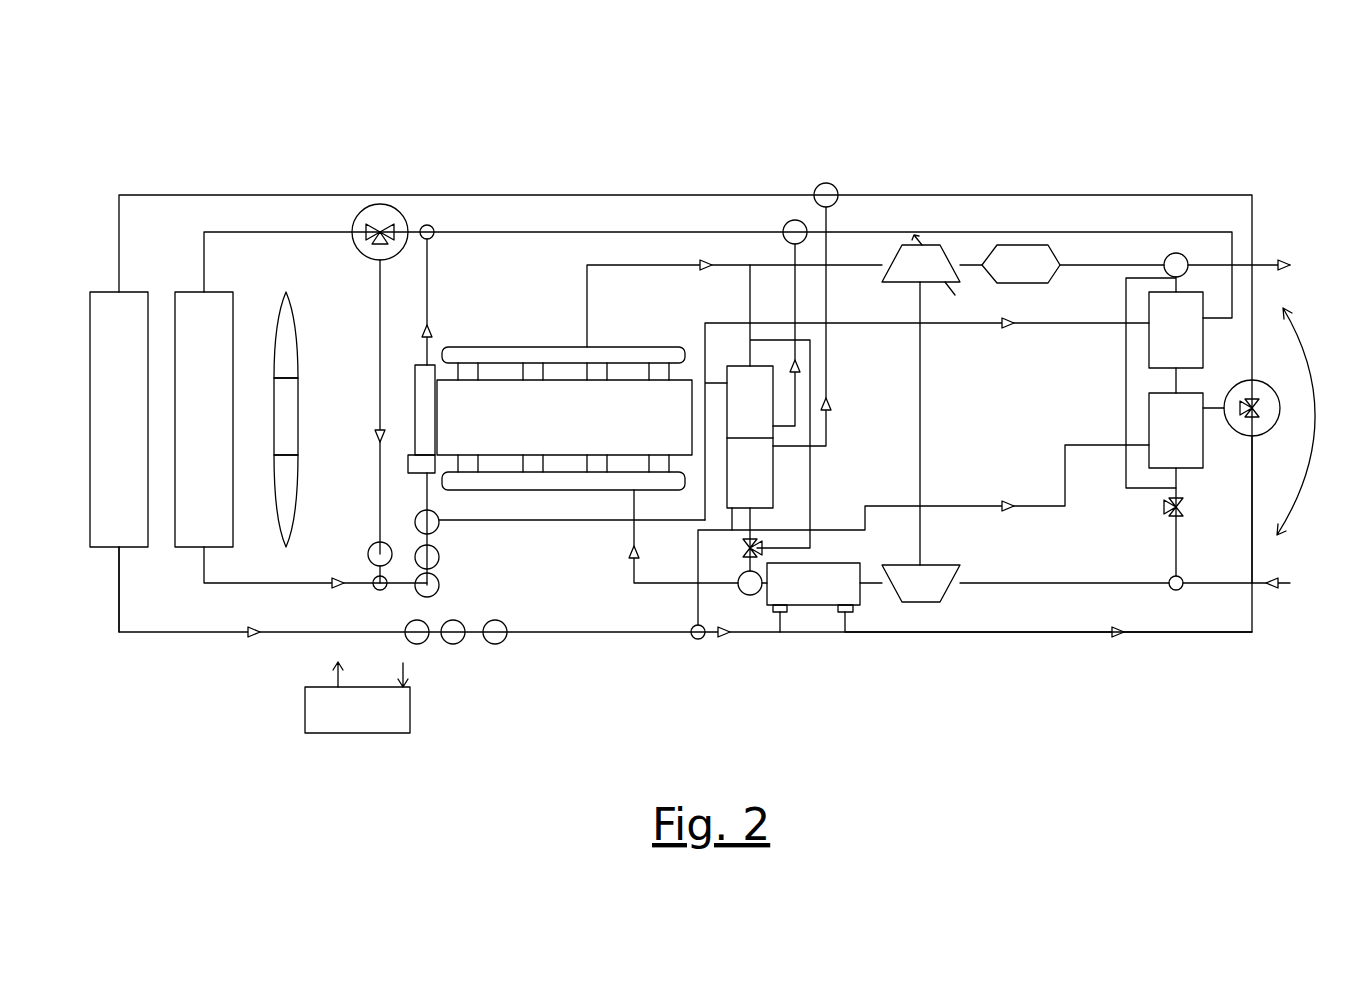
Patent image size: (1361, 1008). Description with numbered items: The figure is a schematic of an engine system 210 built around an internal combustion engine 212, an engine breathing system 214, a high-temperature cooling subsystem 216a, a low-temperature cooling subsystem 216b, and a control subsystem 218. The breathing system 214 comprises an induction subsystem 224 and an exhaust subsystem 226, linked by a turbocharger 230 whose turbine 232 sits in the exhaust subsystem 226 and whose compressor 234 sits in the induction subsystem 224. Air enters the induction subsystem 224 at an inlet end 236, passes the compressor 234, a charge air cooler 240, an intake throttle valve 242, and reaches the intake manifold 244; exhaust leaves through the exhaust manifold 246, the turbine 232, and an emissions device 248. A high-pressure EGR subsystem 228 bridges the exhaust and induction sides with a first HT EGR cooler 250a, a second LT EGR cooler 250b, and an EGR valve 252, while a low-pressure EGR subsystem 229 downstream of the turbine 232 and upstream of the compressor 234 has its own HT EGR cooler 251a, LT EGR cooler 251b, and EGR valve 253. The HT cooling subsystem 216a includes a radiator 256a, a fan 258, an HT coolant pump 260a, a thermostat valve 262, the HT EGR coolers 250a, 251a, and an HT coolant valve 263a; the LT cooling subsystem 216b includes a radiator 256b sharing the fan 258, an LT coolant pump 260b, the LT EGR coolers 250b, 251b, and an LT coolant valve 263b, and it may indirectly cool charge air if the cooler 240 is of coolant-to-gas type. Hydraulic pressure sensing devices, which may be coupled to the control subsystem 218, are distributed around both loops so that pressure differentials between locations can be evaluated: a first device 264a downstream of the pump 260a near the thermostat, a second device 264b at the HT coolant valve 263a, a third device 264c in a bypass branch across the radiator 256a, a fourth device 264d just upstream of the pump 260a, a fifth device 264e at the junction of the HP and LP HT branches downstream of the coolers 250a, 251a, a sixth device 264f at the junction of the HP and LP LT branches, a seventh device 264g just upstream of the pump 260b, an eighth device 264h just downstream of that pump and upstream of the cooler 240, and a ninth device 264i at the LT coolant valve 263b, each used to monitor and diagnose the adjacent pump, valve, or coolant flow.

The engine system 210 is at (163, 167).
The internal combustion engine 212 is at (554, 329).
The engine breathing system 214 is at (1312, 421).
The high-temperature cooling subsystem 216a is at (201, 278).
The low-temperature cooling subsystem 216b is at (113, 278).
The control subsystem 218 is at (357, 697).
The induction subsystem 224 is at (1272, 601).
The exhaust subsystem 226 is at (1265, 244).
The high-pressure EGR subsystem 228 is at (824, 377).
The low-pressure EGR subsystem 229 is at (1112, 399).
The turbocharger 230 is at (934, 438).
The turbine 232 is at (974, 311).
The compressor 234 is at (953, 558).
The inlet end 236 is at (1259, 577).
The charge air cooler 240 is at (812, 605).
The intake throttle valve 242 is at (750, 595).
The intake manifold 244 is at (567, 490).
The exhaust manifold 246 is at (642, 347).
The emissions device 248 is at (1027, 242).
The HT EGR cooler 250a is at (770, 395).
The LT EGR cooler 250b is at (773, 497).
The HT EGR cooler 251a is at (1149, 348).
The LT EGR cooler 251b is at (1149, 425).
The EGR valve 252 is at (742, 548).
The EGR valve 253 is at (1186, 508).
The radiator 256a is at (199, 548).
The radiator 256b is at (114, 548).
The fan 258 is at (287, 325).
The HT coolant pump 260a is at (440, 557).
The LT coolant pump 260b is at (458, 644).
The thermostat valve 262 is at (415, 455).
The HT coolant valve 263a is at (355, 212).
The LT coolant valve 263b is at (1265, 430).
The first sensing device 264a is at (438, 530).
The second sensing device 264b is at (402, 205).
The third sensing device 264c is at (368, 554).
The fourth sensing device 264d is at (437, 592).
The fifth sensing device 264e is at (790, 220).
The sixth sensing device 264f is at (822, 183).
The seventh sensing device 264g is at (420, 644).
The eighth sensing device 264h is at (500, 644).
The ninth sensing device 264i is at (1248, 440).